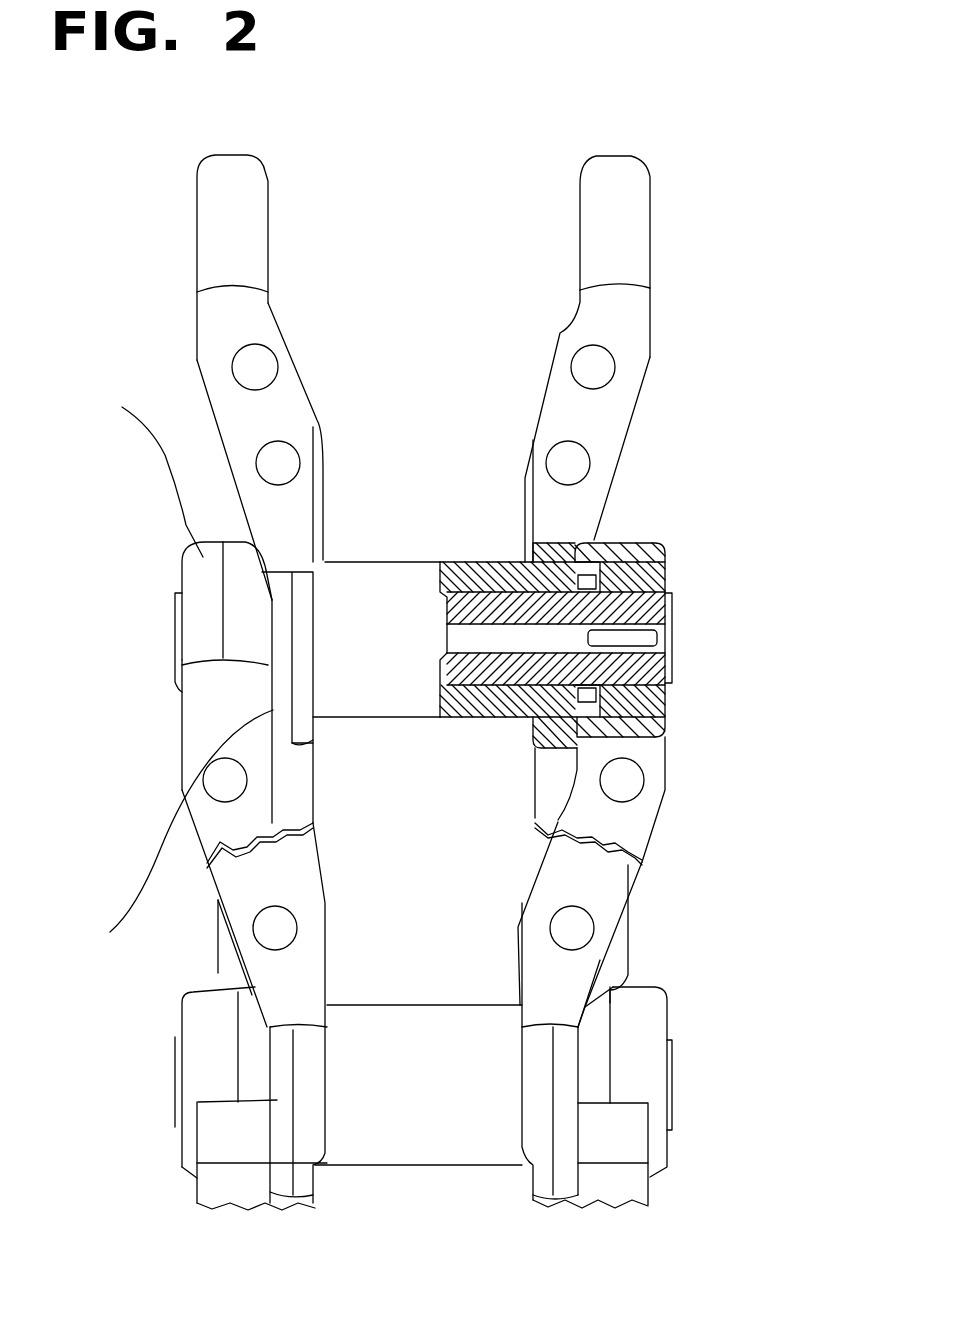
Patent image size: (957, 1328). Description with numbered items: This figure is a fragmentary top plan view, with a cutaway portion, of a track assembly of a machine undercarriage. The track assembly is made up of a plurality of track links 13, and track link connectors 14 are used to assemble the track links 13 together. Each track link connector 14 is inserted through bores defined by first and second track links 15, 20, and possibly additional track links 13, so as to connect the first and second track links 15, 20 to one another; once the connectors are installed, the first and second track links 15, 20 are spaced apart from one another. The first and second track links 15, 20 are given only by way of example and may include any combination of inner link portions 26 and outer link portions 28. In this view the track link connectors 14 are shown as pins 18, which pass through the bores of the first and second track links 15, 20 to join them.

The track links 13 is at (233, 428).
The track link connectors 14 is at (690, 662).
The first track link 15 is at (653, 232).
The pins 18 is at (673, 603).
The second track link 20 is at (192, 224).
The inner link portions 26 is at (270, 1098).
The outer link portions 28 is at (207, 695).